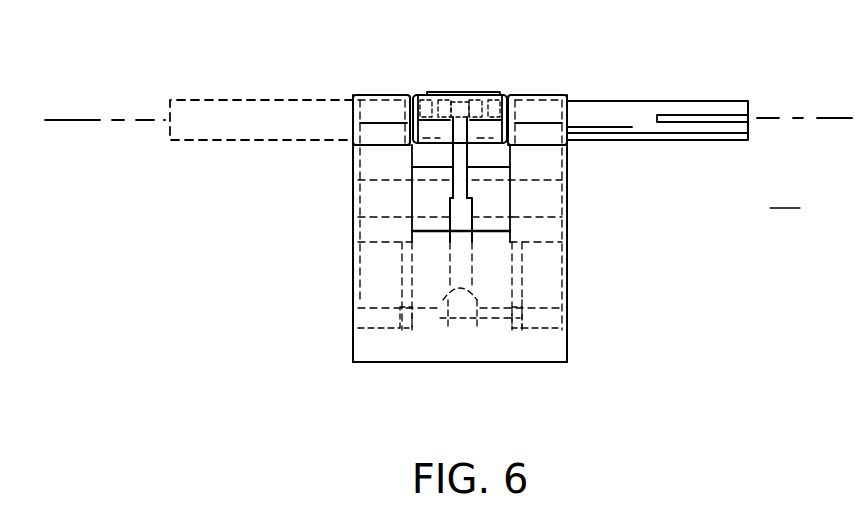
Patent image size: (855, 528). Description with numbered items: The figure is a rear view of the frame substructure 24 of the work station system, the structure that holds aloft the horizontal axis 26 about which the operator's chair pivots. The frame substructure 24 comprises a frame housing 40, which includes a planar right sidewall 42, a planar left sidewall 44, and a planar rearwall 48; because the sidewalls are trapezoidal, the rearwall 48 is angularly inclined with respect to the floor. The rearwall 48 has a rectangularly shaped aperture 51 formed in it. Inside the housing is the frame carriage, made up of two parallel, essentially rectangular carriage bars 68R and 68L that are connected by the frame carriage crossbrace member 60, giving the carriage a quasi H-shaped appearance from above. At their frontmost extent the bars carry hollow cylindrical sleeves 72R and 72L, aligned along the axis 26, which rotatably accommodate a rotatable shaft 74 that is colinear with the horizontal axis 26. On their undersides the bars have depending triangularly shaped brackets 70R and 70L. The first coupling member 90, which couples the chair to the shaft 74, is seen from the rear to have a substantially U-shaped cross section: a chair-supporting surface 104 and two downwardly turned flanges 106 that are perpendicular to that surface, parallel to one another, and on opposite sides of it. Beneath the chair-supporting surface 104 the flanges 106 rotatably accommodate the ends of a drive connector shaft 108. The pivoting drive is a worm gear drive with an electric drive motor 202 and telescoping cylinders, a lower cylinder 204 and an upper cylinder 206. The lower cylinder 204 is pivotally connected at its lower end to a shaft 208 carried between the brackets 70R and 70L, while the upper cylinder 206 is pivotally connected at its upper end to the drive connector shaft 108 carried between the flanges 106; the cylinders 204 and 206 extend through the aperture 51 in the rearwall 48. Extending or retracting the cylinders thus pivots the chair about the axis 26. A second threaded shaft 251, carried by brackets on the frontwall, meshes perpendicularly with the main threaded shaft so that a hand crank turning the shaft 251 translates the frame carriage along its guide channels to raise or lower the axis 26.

The frame substructure 24 is at (770, 208).
The horizontal axis 26 is at (795, 117).
The frame housing 40 is at (540, 381).
The right sidewall 42 is at (472, 237).
The left sidewall 44 is at (352, 270).
The rearwall 48 is at (430, 353).
The aperture 51 is at (410, 238).
The frame carriage crossbrace member 60 is at (428, 207).
The left carriage bar 68L is at (398, 298).
The right carriage bar 68R is at (532, 158).
The left carriage bar bracket 70L is at (457, 300).
The right carriage bar bracket 70R is at (515, 297).
The left sleeve 72L is at (410, 130).
The right sleeve 72R is at (570, 100).
The rotatable shaft 74 is at (723, 108).
The first coupling member 90 is at (497, 96).
The chair-supporting surface 104 is at (417, 95).
The flanges 106 is at (360, 121).
The drive connector shaft 108 is at (412, 108).
The electric drive motor 202 is at (448, 310).
The lower cylinder 204 is at (467, 253).
The upper cylinder 206 is at (512, 180).
The shaft 208 is at (487, 320).
The second threaded shaft 251 is at (543, 220).